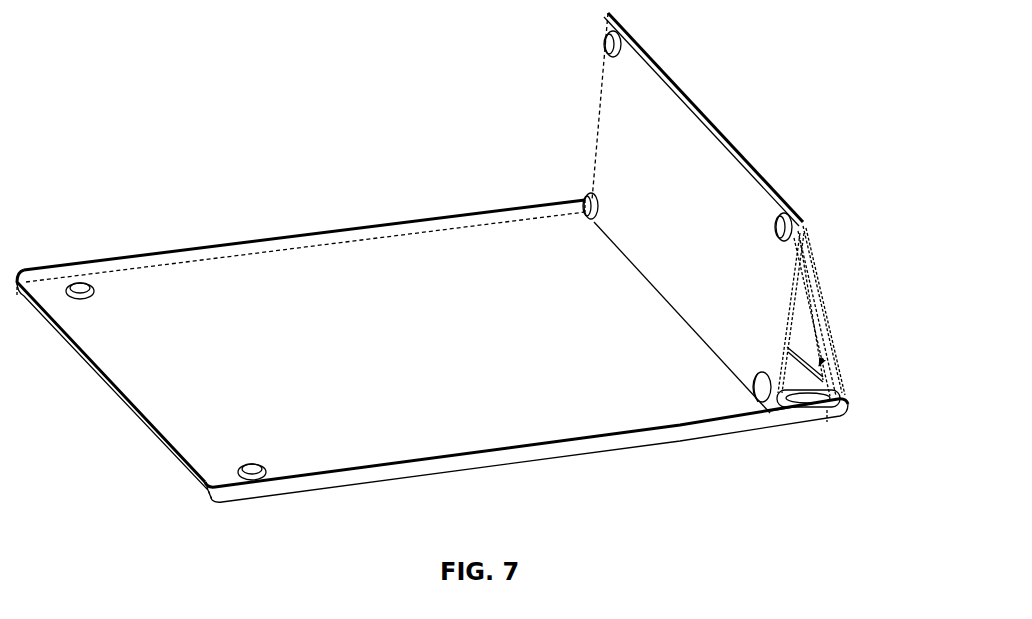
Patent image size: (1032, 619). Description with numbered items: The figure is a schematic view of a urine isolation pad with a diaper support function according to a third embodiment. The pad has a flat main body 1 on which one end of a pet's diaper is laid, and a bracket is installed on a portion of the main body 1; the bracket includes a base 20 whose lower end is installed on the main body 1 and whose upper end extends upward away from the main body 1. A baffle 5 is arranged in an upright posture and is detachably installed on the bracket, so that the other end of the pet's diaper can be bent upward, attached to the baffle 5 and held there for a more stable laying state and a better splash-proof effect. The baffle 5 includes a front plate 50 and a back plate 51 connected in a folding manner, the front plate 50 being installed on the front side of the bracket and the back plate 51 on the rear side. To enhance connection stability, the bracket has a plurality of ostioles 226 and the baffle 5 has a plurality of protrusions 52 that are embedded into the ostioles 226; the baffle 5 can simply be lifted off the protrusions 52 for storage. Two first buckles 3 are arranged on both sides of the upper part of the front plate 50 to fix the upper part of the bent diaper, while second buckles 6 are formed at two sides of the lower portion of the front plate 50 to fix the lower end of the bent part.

The main body 1 is at (296, 266).
The first buckle 3 is at (603, 40).
The baffle 5 is at (724, 131).
The second buckle 6 is at (582, 203).
The base 20 is at (850, 408).
The front plate 50 is at (727, 318).
The back plate 51 is at (821, 271).
The protrusion 52 is at (813, 309).
The ostiole 226 is at (819, 317).